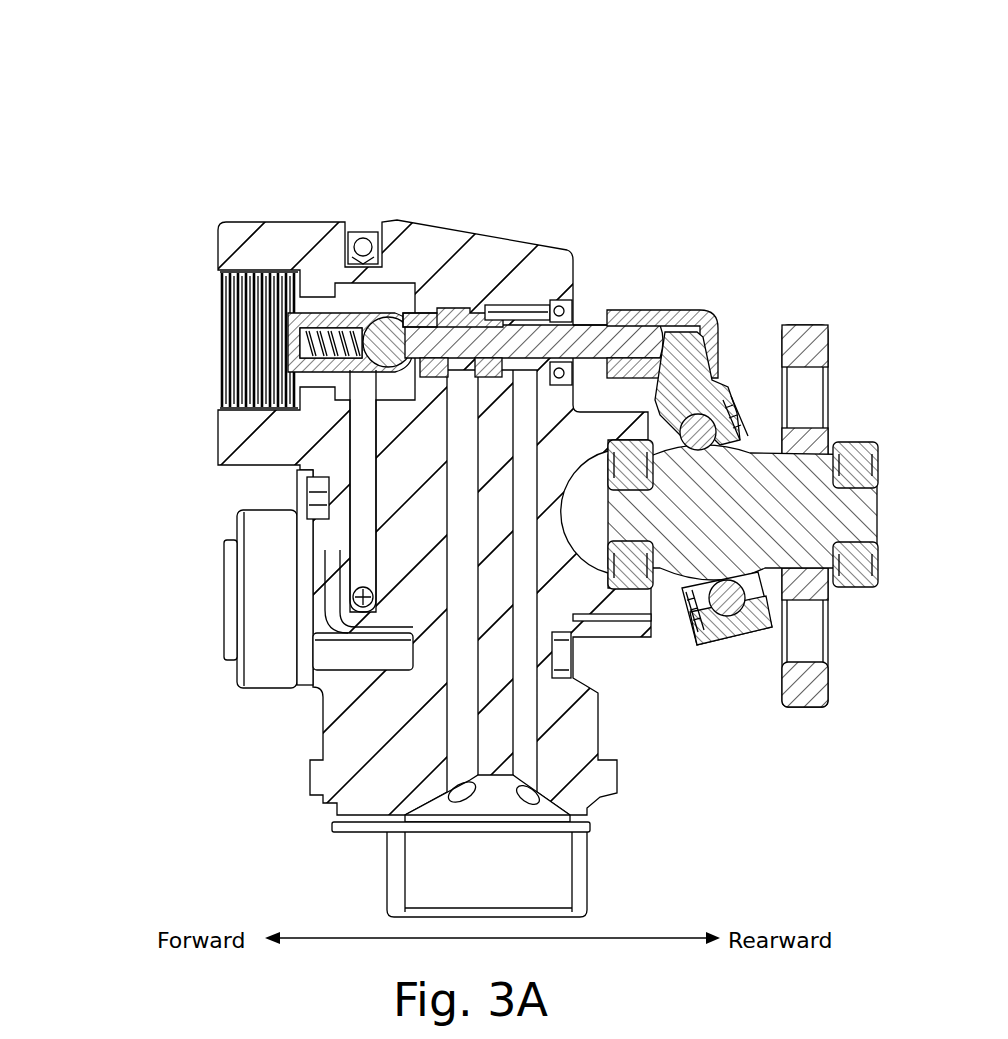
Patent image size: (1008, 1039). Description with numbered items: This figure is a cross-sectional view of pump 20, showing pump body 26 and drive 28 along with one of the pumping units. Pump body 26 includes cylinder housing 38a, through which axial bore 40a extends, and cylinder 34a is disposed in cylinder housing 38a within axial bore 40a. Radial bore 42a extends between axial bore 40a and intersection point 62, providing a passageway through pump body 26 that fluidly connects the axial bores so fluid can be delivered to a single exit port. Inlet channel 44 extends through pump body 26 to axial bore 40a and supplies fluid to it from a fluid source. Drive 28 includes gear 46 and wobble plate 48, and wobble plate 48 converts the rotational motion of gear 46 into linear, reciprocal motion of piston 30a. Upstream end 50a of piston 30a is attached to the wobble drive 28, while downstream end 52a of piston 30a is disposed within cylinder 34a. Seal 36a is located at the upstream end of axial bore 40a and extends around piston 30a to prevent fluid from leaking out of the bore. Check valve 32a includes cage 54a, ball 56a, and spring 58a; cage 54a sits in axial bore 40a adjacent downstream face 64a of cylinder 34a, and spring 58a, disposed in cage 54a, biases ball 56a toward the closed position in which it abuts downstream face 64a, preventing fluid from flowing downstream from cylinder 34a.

The pump 20 is at (128, 244).
The pump body 26 is at (287, 450).
The drive 28 is at (824, 737).
The piston 30a is at (594, 325).
The check valve 32a is at (327, 313).
The cylinder 34a is at (455, 295).
The seal 36a is at (591, 318).
The cylinder housing 38a is at (448, 263).
The axial bore 40a is at (522, 295).
The radial bore 42a is at (362, 484).
The inlet channel 44 is at (457, 683).
The gear 46 is at (807, 325).
The wobble plate 48 is at (700, 643).
The upstream end 50a is at (657, 340).
The downstream end 52a is at (424, 360).
The cage 54a is at (308, 300).
The ball 56a is at (385, 330).
The spring 58a is at (310, 337).
The intersection point 62 is at (377, 600).
The downstream face 64a is at (417, 313).